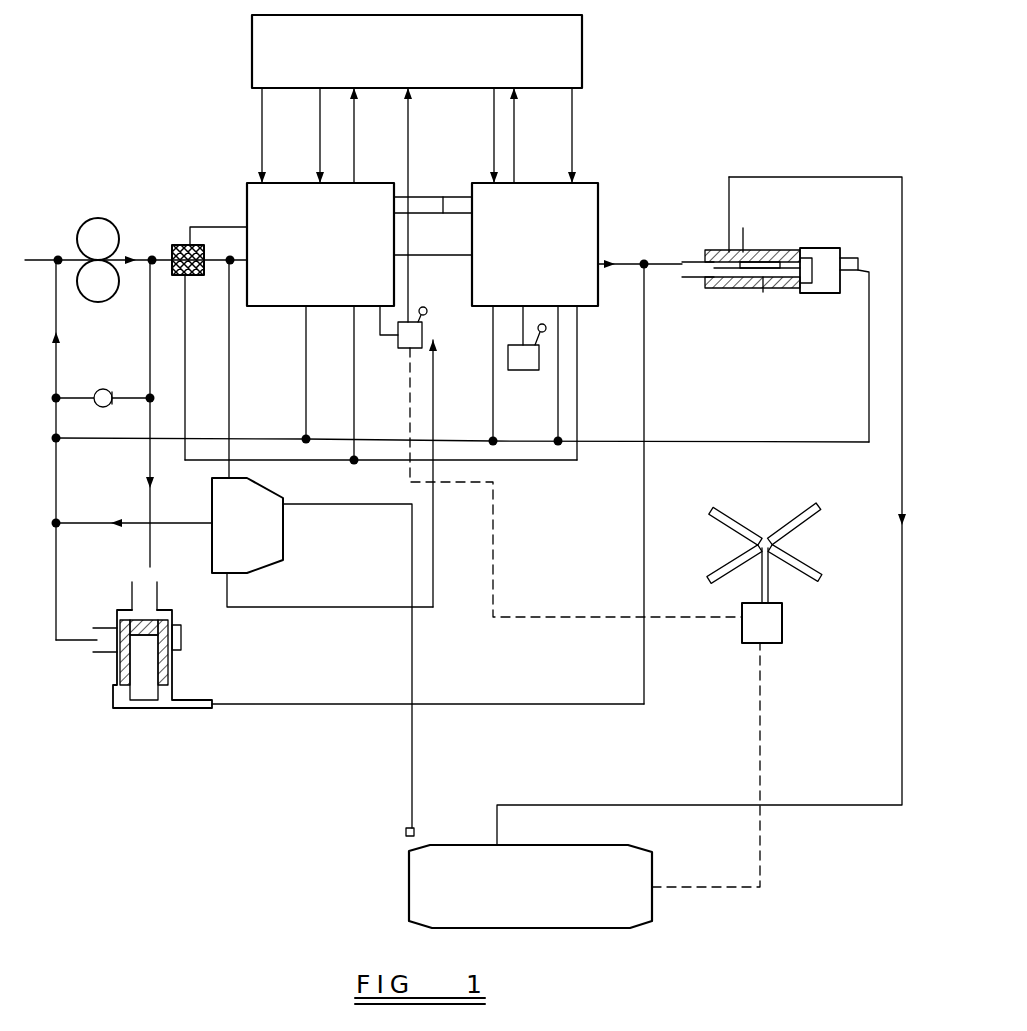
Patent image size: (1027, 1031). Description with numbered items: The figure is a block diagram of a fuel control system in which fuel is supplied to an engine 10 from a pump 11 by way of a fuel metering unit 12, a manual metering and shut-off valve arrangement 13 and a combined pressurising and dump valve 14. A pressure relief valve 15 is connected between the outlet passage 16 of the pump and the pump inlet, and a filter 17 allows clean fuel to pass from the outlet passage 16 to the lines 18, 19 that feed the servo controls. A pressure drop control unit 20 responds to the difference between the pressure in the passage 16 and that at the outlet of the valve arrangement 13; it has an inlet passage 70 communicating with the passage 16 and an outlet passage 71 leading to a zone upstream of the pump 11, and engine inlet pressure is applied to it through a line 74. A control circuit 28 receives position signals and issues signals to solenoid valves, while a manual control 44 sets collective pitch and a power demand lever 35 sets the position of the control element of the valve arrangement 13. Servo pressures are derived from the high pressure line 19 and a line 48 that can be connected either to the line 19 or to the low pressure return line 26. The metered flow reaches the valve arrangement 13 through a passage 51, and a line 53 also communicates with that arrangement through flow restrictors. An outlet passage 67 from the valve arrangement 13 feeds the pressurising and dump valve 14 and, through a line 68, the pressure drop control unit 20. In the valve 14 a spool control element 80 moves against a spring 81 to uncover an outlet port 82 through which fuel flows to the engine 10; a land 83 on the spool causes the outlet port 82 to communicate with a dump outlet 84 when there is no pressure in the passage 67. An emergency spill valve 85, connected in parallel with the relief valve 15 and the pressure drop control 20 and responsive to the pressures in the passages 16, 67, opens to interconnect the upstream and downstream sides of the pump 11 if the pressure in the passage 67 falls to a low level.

The engine 10 is at (570, 858).
The pump 11 is at (105, 230).
The fuel metering unit 12 is at (287, 292).
The manual metering and shut-off valve arrangement 13 is at (598, 210).
The combined pressurising and dump valve 14 is at (775, 284).
The pressure relief valve 15 is at (105, 390).
The outlet passage 16 is at (218, 263).
The filter 17 is at (180, 245).
The line 18 is at (222, 227).
The line 19 is at (386, 460).
The pressure drop control unit 20 is at (275, 542).
The low pressure return line 26 is at (607, 443).
The circuit 28 is at (572, 47).
The power demand lever 35 is at (520, 358).
The manual control 44 is at (405, 345).
The line 48 is at (418, 197).
The passage 51 is at (450, 255).
The line 53 is at (443, 197).
The outlet passage 67 is at (644, 262).
The line 68 is at (436, 427).
The inlet passage 70 is at (229, 410).
The outlet passage 71 is at (93, 523).
The line 74 is at (380, 505).
The spool control element 80 is at (755, 292).
The spring 81 is at (826, 293).
The outlet port 82 is at (724, 237).
The land 83 is at (732, 290).
The dump outlet 84 is at (763, 292).
The emergency spill valve 85 is at (190, 660).